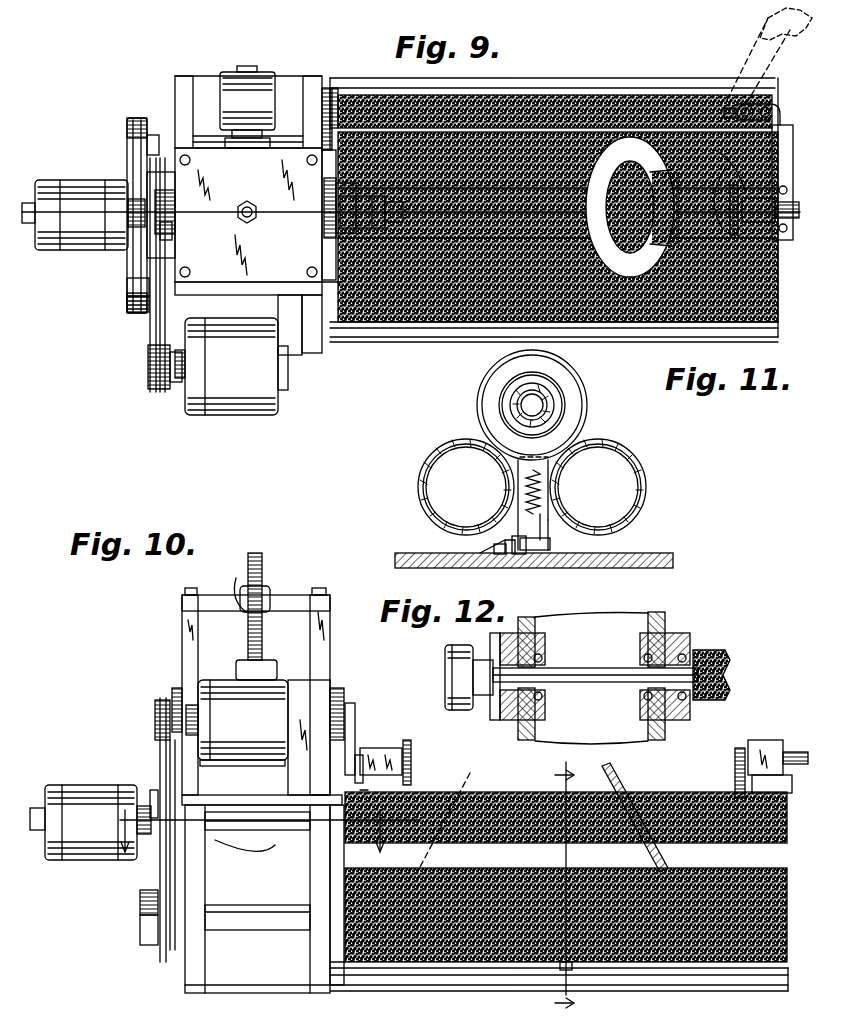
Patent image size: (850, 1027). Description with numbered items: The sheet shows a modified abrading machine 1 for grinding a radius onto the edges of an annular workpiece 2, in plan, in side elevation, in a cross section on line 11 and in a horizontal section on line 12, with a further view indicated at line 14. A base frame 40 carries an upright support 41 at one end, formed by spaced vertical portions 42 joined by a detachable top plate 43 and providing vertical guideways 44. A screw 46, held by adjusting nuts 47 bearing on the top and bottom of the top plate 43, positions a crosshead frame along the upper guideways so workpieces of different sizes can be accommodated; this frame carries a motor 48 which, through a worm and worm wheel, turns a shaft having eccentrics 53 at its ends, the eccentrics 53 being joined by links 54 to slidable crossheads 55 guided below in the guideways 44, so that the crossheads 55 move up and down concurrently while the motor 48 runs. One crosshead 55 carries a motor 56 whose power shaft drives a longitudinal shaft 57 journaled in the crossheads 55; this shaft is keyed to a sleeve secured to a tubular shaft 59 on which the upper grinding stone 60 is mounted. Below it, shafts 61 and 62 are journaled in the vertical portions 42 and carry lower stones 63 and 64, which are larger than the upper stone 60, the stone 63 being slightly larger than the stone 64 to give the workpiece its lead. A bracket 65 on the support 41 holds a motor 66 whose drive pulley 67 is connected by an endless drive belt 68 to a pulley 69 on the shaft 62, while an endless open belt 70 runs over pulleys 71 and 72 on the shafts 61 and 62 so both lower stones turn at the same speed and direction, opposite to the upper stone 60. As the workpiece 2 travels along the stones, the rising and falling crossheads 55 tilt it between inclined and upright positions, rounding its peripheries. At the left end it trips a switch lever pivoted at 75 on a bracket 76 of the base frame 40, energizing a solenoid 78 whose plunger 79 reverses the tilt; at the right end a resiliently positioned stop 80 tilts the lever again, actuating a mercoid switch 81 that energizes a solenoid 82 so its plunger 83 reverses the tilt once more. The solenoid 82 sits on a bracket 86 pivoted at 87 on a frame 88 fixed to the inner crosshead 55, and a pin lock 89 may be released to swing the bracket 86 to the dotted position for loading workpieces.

In FIG. 9, the abrading or grinding machine 1 is at (287, 72).
In FIG. 10, the abrading or grinding machine 1 is at (335, 622).
In FIG. 9, the workpiece 2 is at (640, 150).
In FIG. 11, the workpiece 2 is at (572, 385).
In FIG. 10, the workpiece 2 is at (612, 778).
In FIG. 10, the section line 11— 11 is at (578, 888).
In FIG. 10, the section line 12— 12 is at (291, 838).
In FIG. 9, the view line 14— 14 is at (15, 232).
In FIG. 9, the base frame 40 is at (392, 337).
In FIG. 11, the base frame 40 is at (670, 553).
In FIG. 10, the base frame 40 is at (480, 978).
In FIG. 9, the upright support 41 is at (176, 84).
In FIG. 12, the upright support 41 is at (660, 612).
In FIG. 10, the upright support 41 is at (182, 652).
In FIG. 9, the spaced vertical portions 42 is at (184, 78).
In FIG. 12, the spaced vertical portions 42 is at (560, 626).
In FIG. 10, the spaced vertical portions 42 is at (182, 622).
In FIG. 9, the top plate 43 is at (312, 330).
In FIG. 10, the top plate 43 is at (292, 597).
In FIG. 12, the vertical guideways 44 is at (518, 722).
In FIG. 9, the screw 46 is at (255, 222).
In FIG. 10, the screw 46 is at (262, 565).
In FIG. 9, the adjusting nuts 47 is at (251, 203).
In FIG. 10, the adjusting nuts 47 is at (240, 596).
In FIG. 9, the motor 48 is at (245, 86).
In FIG. 9, the eccentrics 53 is at (172, 230).
In FIG. 10, the eccentrics 53 is at (175, 698).
In FIG. 10, the links 54 is at (352, 740).
In FIG. 9, the slidable crossheads 55 is at (150, 246).
In FIG. 12, the slidable crossheads 55 is at (518, 705).
In FIG. 10, the slidable crossheads 55 is at (275, 848).
In FIG. 9, the motor 56 is at (80, 180).
In FIG. 12, the motor 56 is at (448, 658).
In FIG. 10, the motor 56 is at (88, 856).
In FIG. 12, the longitudinal shaft 57 is at (625, 682).
In FIG. 10, the longitudinal shaft 57 is at (290, 830).
In FIG. 9, the tubular shaft 59 is at (170, 205).
In FIG. 11, the tubular shaft 59 is at (510, 401).
In FIG. 9, the upper grinding stone 60 is at (752, 172).
In FIG. 11, the upper grinding stone 60 is at (552, 414).
In FIG. 12, the upper grinding stone 60 is at (728, 660).
In FIG. 10, the upper grinding stone 60 is at (680, 792).
In FIG. 9, the longitudinal shaft 61 is at (328, 118).
In FIG. 9, the longitudinal shaft 62 is at (305, 282).
In FIG. 10, the longitudinal shaft 62 is at (248, 905).
In FIG. 9, the lower grinding stone 63 is at (705, 96).
In FIG. 11, the lower grinding stone 63 is at (422, 502).
In FIG. 9, the lower grinding stone 64 is at (770, 312).
In FIG. 10, the lower grinding stone 64 is at (752, 945).
In FIG. 9, the bracket 65 is at (296, 345).
In FIG. 10, the bracket 65 is at (305, 690).
In FIG. 9, the motor 66 is at (256, 405).
In FIG. 10, the motor 66 is at (276, 688).
In FIG. 9, the drive pulley 67 is at (163, 390).
In FIG. 10, the drive pulley 67 is at (156, 716).
In FIG. 9, the endless drive belt 68 is at (158, 340).
In FIG. 10, the endless drive belt 68 is at (160, 756).
In FIG. 9, the pulley 69 is at (150, 320).
In FIG. 11, the pulley 69 is at (636, 470).
In FIG. 10, the pulley 69 is at (172, 958).
In FIG. 9, the endless open belt 70 is at (128, 306).
In FIG. 10, the endless open belt 70 is at (140, 940).
In FIG. 9, the pulley 71 is at (128, 136).
In FIG. 9, the pulley 72 is at (128, 286).
In FIG. 10, the pulley 72 is at (140, 916).
In FIG. 11, the pivot 75 is at (500, 548).
In FIG. 11, the bracket 76 is at (526, 556).
In FIG. 10, the bracket 76 is at (548, 968).
In FIG. 9, the solenoid 78 is at (380, 230).
In FIG. 10, the solenoid 78 is at (380, 748).
In FIG. 9, the plunger 79 is at (398, 240).
In FIG. 11, the plunger 79 is at (548, 512).
In FIG. 10, the plunger 79 is at (408, 752).
In FIG. 11, the resiliently positioned stop 80 is at (552, 500).
In FIG. 11, the mercoid switch 81 is at (566, 392).
In FIG. 9, the solenoid 82 is at (785, 178).
In FIG. 10, the solenoid 82 is at (762, 746).
In FIG. 9, the plunger 83 is at (740, 230).
In FIG. 10, the plunger 83 is at (736, 772).
In FIG. 9, the bracket 86 is at (780, 224).
In FIG. 9, the pivot 87 is at (749, 106).
In FIG. 9, the frame 88 is at (553, 127).
In FIG. 9, the pin lock 89 is at (771, 111).